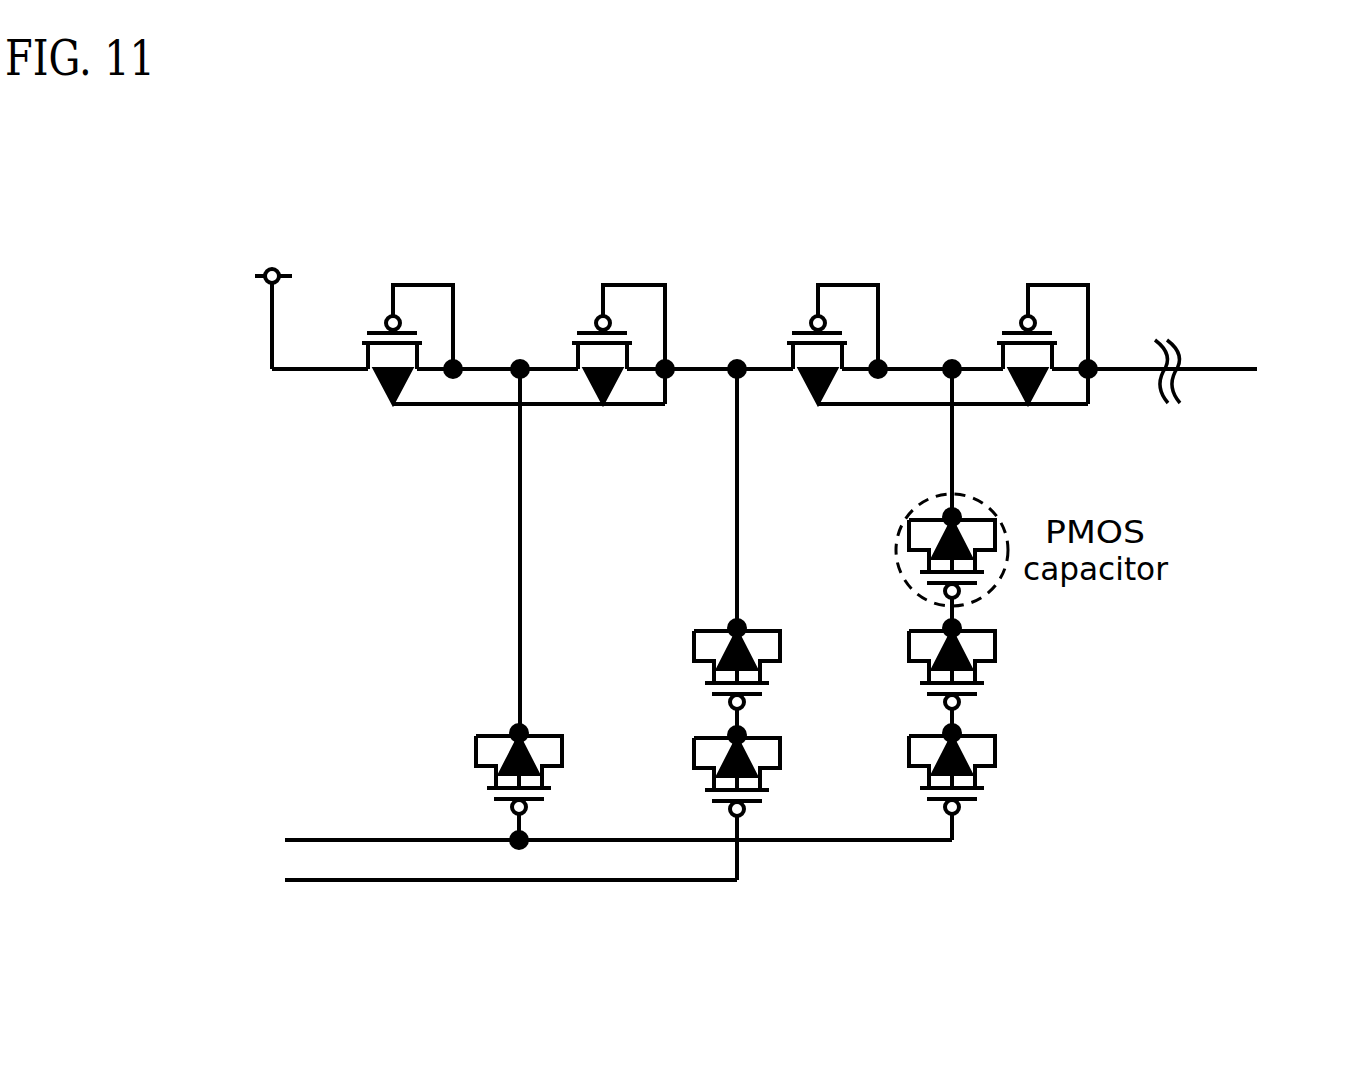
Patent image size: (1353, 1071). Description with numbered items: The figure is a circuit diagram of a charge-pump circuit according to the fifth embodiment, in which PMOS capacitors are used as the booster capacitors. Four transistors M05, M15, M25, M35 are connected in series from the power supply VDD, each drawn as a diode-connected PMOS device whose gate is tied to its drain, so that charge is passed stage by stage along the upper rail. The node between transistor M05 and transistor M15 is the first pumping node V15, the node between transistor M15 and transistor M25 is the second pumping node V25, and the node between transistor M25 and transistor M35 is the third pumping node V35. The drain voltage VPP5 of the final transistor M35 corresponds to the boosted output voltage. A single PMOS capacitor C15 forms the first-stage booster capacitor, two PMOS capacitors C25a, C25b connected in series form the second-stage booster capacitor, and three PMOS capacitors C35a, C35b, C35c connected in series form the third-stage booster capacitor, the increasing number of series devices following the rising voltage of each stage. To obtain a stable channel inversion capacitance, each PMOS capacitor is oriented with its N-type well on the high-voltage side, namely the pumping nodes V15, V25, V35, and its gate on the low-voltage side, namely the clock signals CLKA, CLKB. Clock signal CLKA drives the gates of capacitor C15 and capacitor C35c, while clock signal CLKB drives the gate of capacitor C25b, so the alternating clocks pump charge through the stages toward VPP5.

The power supply voltage VDD is at (301, 290).
The transistor M05 is at (513, 314).
The transistor M15 is at (622, 313).
The transistor M25 is at (937, 313).
The transistor M35 is at (1046, 315).
The node V15 is at (513, 523).
The node V25 is at (728, 470).
The node V35 is at (943, 416).
The drain voltage VPP5 is at (1254, 371).
The PMOS capacitor C15 is at (477, 782).
The PMOS capacitor C25a is at (690, 677).
The PMOS capacitor C25b is at (688, 803).
The PMOS capacitor C35a is at (910, 561).
The PMOS capacitor C35b is at (905, 676).
The PMOS capacitor C35c is at (905, 782).
The clock signal CLKA is at (557, 841).
The clock signal CLKB is at (449, 889).